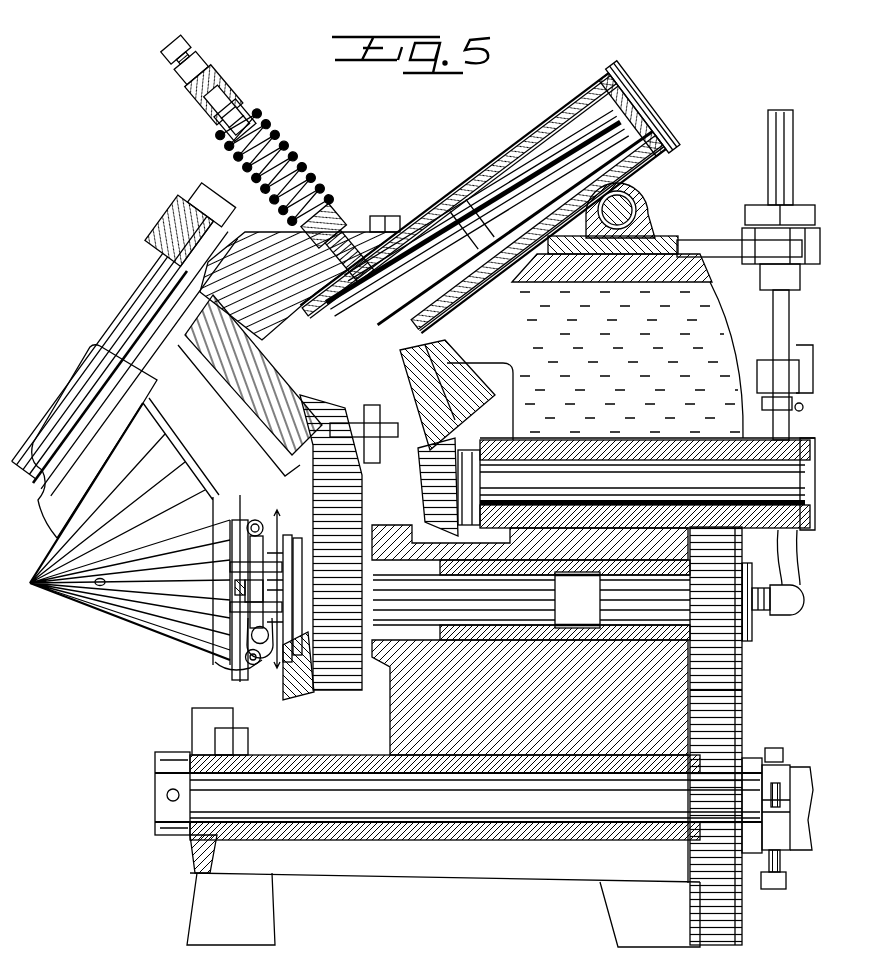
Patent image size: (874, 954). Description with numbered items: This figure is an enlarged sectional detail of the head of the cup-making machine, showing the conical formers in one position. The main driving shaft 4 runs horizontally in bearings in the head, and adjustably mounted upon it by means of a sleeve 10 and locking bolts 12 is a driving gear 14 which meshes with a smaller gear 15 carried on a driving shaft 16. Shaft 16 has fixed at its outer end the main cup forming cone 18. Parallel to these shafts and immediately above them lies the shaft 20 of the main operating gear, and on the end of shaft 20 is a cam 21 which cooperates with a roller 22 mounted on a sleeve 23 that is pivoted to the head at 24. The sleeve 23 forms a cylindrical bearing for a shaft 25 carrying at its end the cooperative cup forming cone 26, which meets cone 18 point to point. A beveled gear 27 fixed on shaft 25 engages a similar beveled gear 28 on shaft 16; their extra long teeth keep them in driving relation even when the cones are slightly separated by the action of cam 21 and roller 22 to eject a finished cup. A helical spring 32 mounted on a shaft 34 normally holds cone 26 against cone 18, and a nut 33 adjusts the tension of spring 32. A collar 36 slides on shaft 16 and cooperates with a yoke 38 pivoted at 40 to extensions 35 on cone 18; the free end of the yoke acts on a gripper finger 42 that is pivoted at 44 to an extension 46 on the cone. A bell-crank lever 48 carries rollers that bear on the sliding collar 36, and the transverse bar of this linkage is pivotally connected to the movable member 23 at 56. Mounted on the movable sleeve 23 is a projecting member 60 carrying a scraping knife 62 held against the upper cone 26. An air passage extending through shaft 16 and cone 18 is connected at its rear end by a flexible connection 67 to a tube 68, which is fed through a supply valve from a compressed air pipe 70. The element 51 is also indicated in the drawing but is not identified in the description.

The main driving shaft 4 is at (500, 800).
The sleeve 10 is at (616, 832).
The locking bolts 12 is at (780, 765).
The driving gear 14 is at (742, 720).
The smaller gear 15 is at (758, 654).
The driving shaft 16 is at (524, 602).
The main cup forming cone 18 is at (147, 605).
The shaft 20 is at (640, 476).
The cam 21 is at (432, 486).
The roller 22 is at (422, 452).
The sleeve 23 is at (432, 218).
The pivot 24 is at (640, 196).
The shaft 25 is at (520, 165).
The cooperative cup forming cone 26 is at (76, 539).
The beveled gear 27 is at (232, 488).
The beveled gear 28 is at (340, 695).
The helical spring 32 is at (280, 142).
The nut 33 is at (182, 45).
The shaft 34 is at (218, 80).
The extensions 35 is at (240, 528).
The collar 36 is at (300, 593).
The yoke 38 is at (263, 582).
The pivot 40 is at (258, 520).
The gripper finger 42 is at (238, 662).
The pivot 44 is at (253, 668).
The extension 46 is at (222, 657).
The bell-crank lever 48 is at (293, 700).
The key 51 is at (370, 448).
The pivotal connection 56 is at (395, 430).
The projecting member 60 is at (133, 322).
The scraping knife 62 is at (140, 380).
The flexible connection 67 is at (783, 606).
The tube 68 is at (787, 560).
The pipe 70 is at (773, 161).